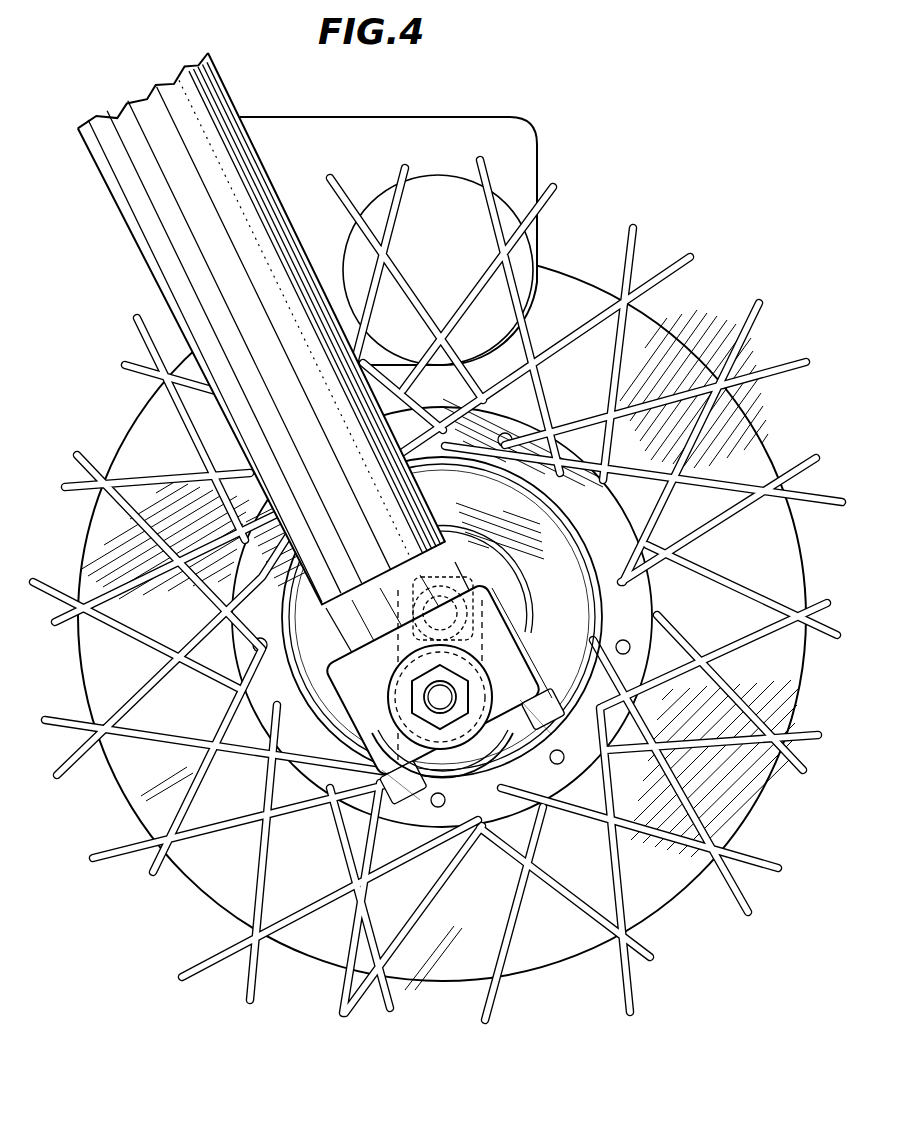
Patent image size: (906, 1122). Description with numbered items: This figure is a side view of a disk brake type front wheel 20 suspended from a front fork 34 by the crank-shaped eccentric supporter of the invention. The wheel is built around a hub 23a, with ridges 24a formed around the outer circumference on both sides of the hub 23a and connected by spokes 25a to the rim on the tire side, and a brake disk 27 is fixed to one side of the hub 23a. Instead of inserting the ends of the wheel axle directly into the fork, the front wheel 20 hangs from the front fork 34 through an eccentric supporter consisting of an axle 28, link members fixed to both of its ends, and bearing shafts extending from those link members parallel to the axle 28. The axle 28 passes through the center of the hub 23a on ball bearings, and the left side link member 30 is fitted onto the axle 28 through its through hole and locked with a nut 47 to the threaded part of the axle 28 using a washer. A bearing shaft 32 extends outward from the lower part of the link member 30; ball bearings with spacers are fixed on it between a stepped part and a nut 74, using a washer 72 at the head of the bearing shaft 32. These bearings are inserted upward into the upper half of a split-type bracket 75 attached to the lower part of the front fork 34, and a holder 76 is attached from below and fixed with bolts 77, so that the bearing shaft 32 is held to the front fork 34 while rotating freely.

The front wheel 20 is at (442, 593).
The hub 23a is at (576, 589).
The ridges 24a is at (244, 666).
The spokes 25a is at (790, 504).
The brake disk 27 is at (140, 413).
The axle 28 is at (396, 598).
The left side link member 30 is at (446, 691).
The bearing shaft 32 is at (436, 711).
The front fork 34 is at (140, 243).
The nut 47 is at (420, 612).
The washer 72 is at (408, 770).
The nut 74 is at (470, 695).
The split-type bracket 75 is at (522, 652).
The holder 76 is at (528, 676).
The bolt 77 is at (536, 738).